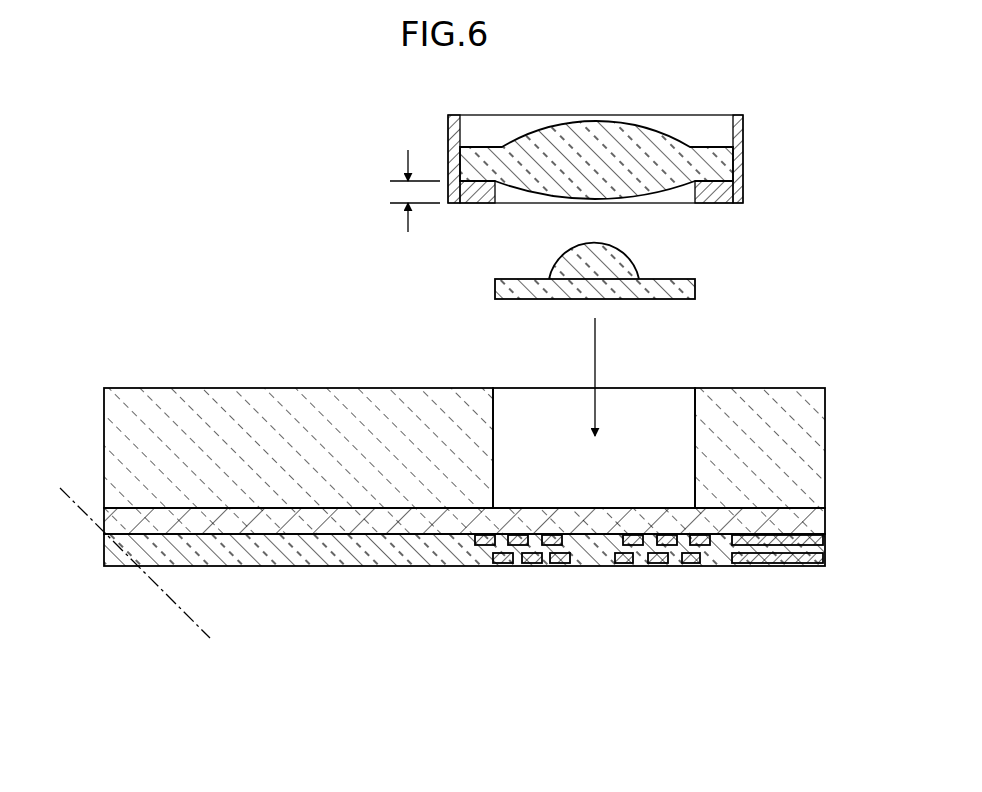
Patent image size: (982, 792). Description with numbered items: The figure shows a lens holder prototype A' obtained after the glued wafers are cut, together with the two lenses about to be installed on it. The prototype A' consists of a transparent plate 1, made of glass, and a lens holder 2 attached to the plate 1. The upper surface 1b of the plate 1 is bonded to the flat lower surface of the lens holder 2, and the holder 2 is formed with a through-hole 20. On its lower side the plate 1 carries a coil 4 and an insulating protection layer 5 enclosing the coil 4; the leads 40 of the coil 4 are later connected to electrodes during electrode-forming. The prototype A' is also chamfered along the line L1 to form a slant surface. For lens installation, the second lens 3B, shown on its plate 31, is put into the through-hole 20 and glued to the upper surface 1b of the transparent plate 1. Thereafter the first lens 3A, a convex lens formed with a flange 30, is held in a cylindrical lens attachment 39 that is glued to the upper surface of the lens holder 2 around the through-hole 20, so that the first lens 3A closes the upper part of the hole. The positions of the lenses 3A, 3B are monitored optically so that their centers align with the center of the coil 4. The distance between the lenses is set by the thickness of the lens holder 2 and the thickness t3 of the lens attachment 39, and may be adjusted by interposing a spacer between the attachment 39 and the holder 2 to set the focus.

The first lens 3A is at (663, 148).
The flange 30 is at (713, 153).
The lens attachment 39 is at (730, 192).
The thickness of the lens attachment t3 is at (403, 191).
The second lens 3B is at (627, 256).
The lens plate 31 is at (690, 283).
The lens holder prototype A' is at (230, 332).
The lens holder 2 is at (817, 423).
The through-hole 20 is at (668, 415).
The upper surface of the transparent plate 1b is at (629, 510).
The transparent plate 1 is at (487, 559).
The protection layer 5 is at (457, 556).
The coil 4 is at (642, 546).
The leads 40 is at (798, 563).
The line L1 is at (200, 633).